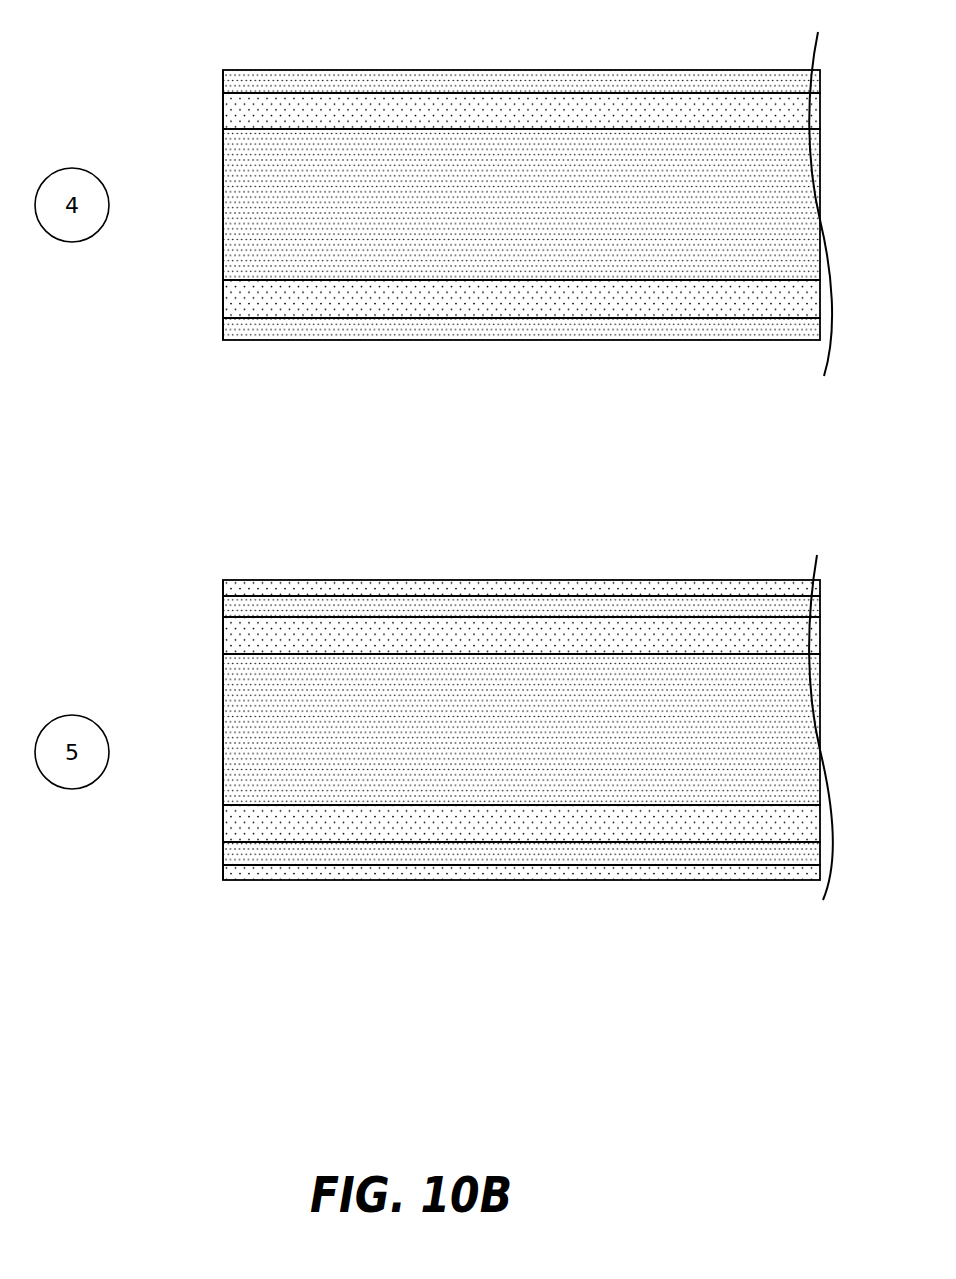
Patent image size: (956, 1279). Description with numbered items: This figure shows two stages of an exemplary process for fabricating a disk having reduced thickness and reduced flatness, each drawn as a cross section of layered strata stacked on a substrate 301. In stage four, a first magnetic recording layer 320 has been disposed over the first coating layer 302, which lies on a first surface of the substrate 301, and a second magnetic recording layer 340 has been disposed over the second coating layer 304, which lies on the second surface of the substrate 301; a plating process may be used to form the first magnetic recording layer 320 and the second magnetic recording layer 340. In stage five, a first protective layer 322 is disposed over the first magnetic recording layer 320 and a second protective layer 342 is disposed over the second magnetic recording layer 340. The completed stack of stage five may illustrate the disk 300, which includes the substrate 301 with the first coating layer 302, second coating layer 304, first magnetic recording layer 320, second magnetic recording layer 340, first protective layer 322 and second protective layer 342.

The disk 300 is at (163, 593).
The substrate 301 is at (531, 217).
The first coating layer 302 is at (531, 122).
The second coating layer 304 is at (531, 311).
The first magnetic recording layer 320 is at (370, 81).
The first protective layer 322 is at (607, 586).
The second magnetic recording layer 340 is at (392, 322).
The second protective layer 342 is at (685, 868).